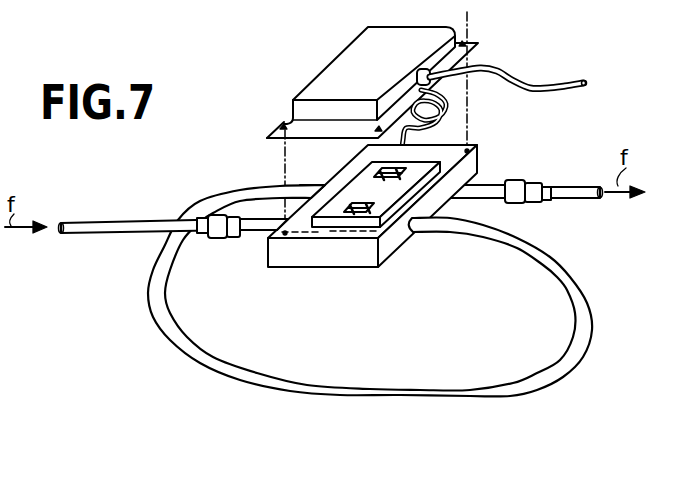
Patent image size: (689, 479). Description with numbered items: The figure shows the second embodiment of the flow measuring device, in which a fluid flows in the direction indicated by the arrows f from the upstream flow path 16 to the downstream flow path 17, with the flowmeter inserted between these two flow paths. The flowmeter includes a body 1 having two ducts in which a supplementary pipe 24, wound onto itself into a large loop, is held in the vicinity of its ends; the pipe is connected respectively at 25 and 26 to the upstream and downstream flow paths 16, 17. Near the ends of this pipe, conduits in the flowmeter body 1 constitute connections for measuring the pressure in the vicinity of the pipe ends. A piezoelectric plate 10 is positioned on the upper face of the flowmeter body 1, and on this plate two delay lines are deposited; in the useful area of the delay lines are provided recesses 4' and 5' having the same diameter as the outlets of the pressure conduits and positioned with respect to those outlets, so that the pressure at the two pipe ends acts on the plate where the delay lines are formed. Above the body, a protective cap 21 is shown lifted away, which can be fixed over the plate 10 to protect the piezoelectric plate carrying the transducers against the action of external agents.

The flowmeter body 1 is at (391, 248).
The recess 4' is at (446, 164).
The recess 5' is at (359, 252).
The plate 10 is at (319, 238).
The upstream flow path 16 is at (104, 234).
The downstream flow path 17 is at (563, 195).
The protective cap 21 is at (331, 83).
The supplementary pipe 24 is at (565, 272).
The connection to upstream flow path 25 is at (225, 239).
The connection to downstream flow path 26 is at (523, 184).